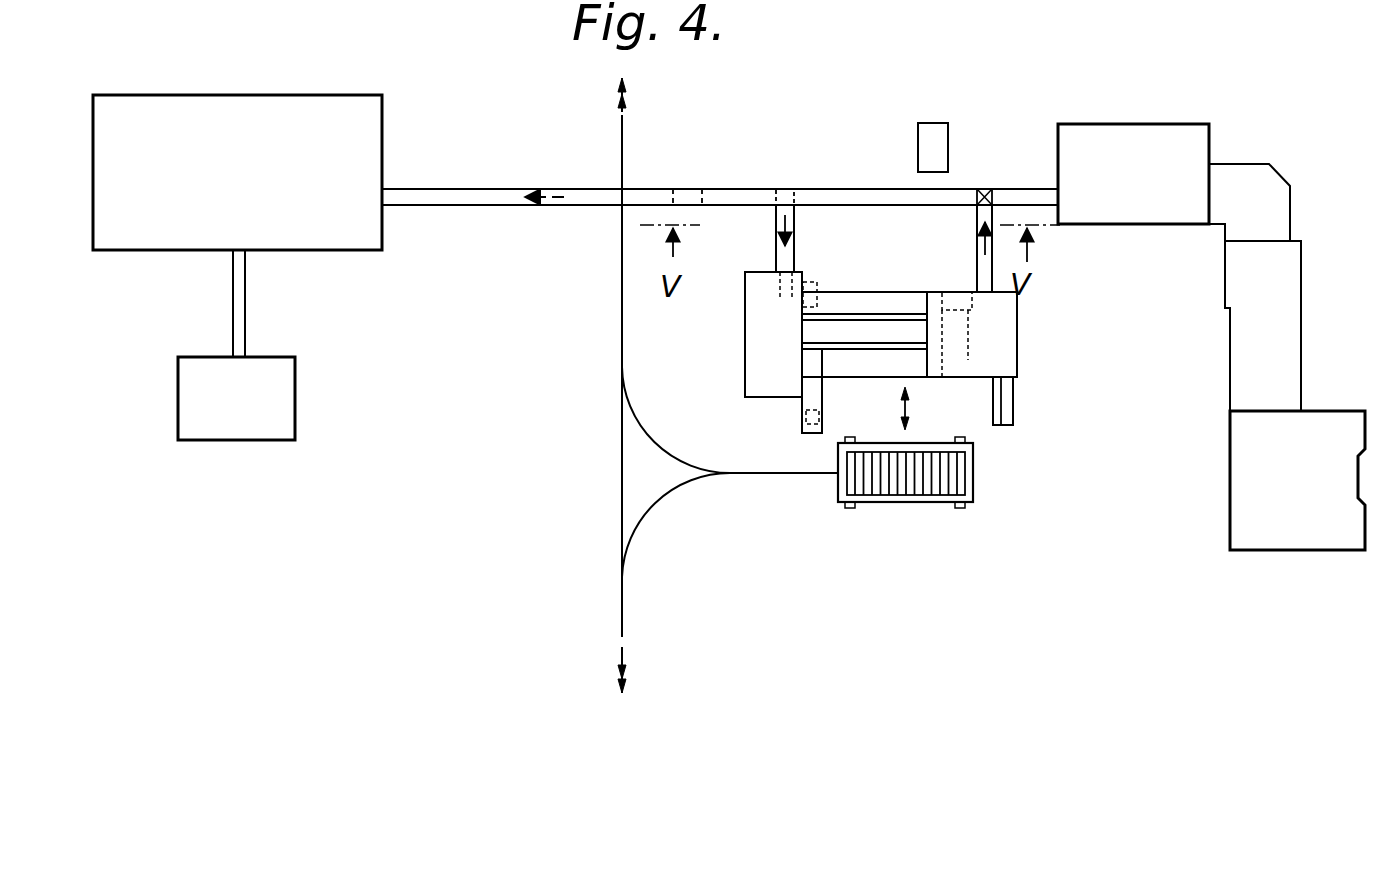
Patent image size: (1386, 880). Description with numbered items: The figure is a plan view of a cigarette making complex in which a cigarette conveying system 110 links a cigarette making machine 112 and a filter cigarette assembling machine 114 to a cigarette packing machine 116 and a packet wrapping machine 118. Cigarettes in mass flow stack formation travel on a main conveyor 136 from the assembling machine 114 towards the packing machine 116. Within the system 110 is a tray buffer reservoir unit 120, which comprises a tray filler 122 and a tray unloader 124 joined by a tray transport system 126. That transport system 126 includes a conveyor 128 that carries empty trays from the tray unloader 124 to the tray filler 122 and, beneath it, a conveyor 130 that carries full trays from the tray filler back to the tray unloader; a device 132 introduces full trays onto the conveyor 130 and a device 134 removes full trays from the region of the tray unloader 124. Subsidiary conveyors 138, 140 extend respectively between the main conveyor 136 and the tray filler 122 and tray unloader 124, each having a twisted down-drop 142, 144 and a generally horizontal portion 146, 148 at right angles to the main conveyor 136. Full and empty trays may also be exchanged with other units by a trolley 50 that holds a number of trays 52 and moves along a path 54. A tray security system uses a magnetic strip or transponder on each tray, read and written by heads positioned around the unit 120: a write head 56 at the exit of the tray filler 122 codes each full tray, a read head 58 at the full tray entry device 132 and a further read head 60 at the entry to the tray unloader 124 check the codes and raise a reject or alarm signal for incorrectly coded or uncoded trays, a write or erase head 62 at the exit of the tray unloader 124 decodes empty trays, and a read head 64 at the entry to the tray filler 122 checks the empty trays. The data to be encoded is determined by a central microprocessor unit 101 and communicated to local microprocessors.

The trolley 50 is at (917, 505).
The trays 52 is at (953, 482).
The path 54 is at (622, 467).
The write head 56 is at (803, 280).
The read head 58 is at (807, 430).
The further read head 60 is at (988, 351).
The write or erase head 62 is at (942, 377).
The read head 64 is at (803, 293).
The central microprocessor unit 101 is at (939, 146).
The cigarette conveying system 110 is at (652, 160).
The cigarette making machine 112 is at (1325, 492).
The filter cigarette assembling machine 114 is at (1160, 184).
The cigarette packing machine 116 is at (262, 190).
The packet wrapping machine 118 is at (262, 410).
The tray buffer reservoir unit 120 is at (1022, 378).
The tray filler 122 is at (745, 331).
The tray unloader 124 is at (1017, 357).
The tray transport system 126 is at (851, 277).
The conveyor 128 is at (868, 317).
The conveyor 130 is at (890, 313).
The device for introducing full trays 132 is at (808, 372).
The device for removing full trays 134 is at (1014, 422).
The main conveyor 136 is at (483, 188).
The subsidiary conveyor 138 is at (772, 239).
The subsidiary conveyor 140 is at (1002, 287).
The twisted down-drop 142 is at (782, 189).
The twisted down-drop 144 is at (984, 192).
The generally horizontal portion 146 is at (796, 215).
The generally horizontal portion 148 is at (978, 212).